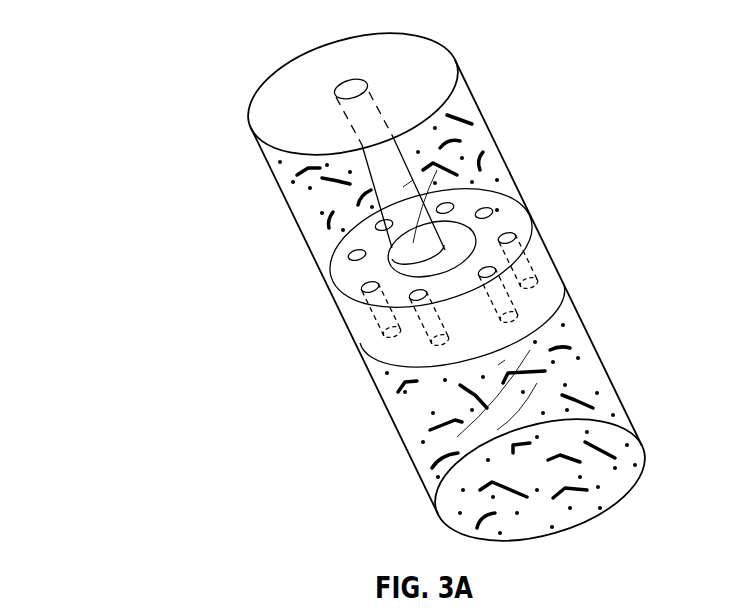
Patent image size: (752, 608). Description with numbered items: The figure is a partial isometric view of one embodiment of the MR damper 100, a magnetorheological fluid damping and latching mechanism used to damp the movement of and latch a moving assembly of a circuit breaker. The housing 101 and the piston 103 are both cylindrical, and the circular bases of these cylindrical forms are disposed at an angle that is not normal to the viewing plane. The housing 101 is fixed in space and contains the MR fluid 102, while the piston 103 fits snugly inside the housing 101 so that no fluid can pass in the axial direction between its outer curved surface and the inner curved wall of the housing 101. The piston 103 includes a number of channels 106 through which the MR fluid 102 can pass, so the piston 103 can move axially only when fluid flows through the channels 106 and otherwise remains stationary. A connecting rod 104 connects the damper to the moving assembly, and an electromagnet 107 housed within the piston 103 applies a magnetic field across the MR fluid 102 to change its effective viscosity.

The MR damper 100 is at (126, 30).
The housing 101 is at (490, 138).
The MR fluid 102 is at (573, 382).
The piston 103 is at (515, 218).
The connecting rod 104 is at (352, 88).
The channels 106 is at (353, 250).
The electromagnet 107 is at (387, 250).